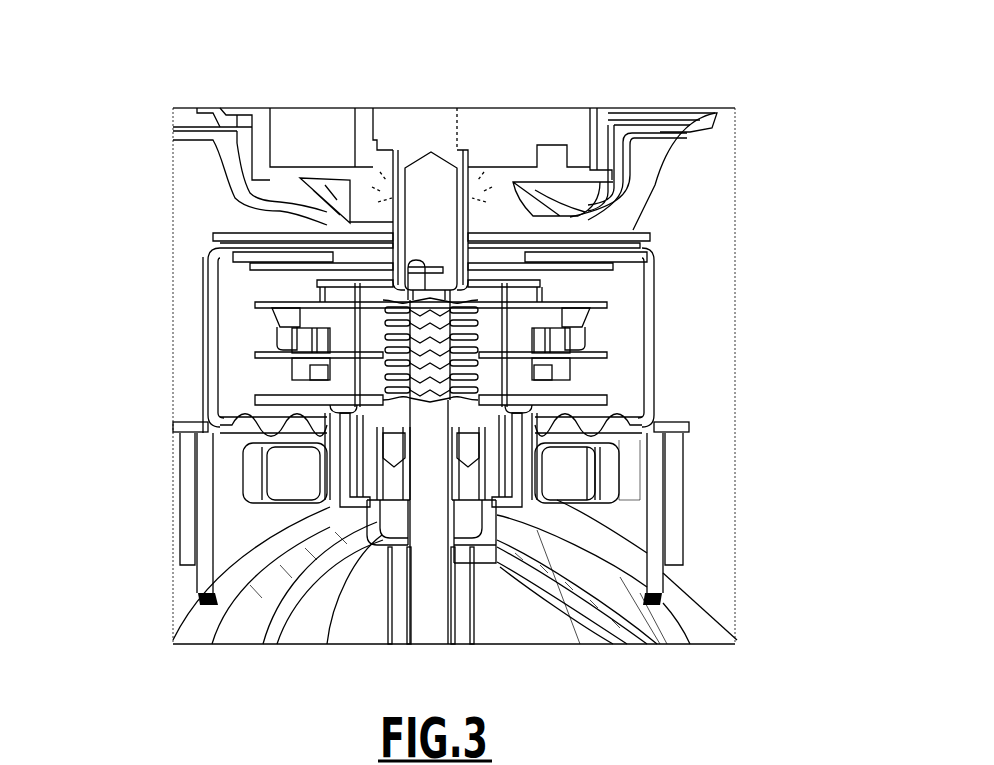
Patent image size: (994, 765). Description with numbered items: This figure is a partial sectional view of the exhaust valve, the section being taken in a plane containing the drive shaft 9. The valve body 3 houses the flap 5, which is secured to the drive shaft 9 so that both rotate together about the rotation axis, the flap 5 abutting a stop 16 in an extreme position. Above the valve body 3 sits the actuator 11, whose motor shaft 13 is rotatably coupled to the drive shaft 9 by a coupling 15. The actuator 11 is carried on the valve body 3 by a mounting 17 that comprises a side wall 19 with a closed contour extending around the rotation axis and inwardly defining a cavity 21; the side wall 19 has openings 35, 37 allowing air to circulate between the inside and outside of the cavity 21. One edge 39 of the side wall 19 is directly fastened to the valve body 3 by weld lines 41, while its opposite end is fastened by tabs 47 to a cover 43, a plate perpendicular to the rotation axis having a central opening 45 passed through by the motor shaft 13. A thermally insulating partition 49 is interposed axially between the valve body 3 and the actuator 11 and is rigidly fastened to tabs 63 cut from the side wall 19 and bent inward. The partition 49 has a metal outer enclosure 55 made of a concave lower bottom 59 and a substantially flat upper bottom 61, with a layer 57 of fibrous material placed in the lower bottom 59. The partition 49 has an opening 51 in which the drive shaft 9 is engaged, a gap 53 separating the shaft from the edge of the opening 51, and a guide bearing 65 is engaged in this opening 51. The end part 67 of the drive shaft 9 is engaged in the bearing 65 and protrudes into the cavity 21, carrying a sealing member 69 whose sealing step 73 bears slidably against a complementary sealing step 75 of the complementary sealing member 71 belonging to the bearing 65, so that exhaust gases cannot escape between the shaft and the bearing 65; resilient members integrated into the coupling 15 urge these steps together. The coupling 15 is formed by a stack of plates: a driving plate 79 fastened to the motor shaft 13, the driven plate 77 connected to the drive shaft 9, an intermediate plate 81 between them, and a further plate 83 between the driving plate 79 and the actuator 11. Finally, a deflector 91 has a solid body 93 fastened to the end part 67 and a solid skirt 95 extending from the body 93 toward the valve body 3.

The valve body 3 is at (667, 633).
The flap 5 is at (360, 618).
The drive shaft 9 is at (423, 570).
The actuator 11 is at (395, 80).
The motor shaft 13 is at (427, 215).
The coupling 15 is at (225, 312).
The stop 16 is at (603, 607).
The mounting 17 is at (168, 478).
The side wall 19 is at (177, 428).
The cavity 21 is at (650, 315).
The opening 35 is at (375, 405).
The opening 37 is at (655, 370).
The edge 39 is at (663, 600).
The weld lines 41 is at (737, 640).
The cover 43 is at (717, 113).
The central opening 45 is at (493, 167).
The tabs 47 is at (655, 308).
The thermally insulating partition 49 is at (672, 465).
The opening 51 is at (657, 563).
The gap 53 is at (340, 527).
The metal outer enclosure 55 is at (617, 483).
The layer of fibrous material 57 is at (185, 605).
The concave lower bottom 59 is at (325, 480).
The upper bottom 61 is at (253, 447).
The tabs 63 is at (292, 480).
The guide bearing 65 is at (388, 527).
The end part 67 is at (288, 321).
The sealing member 69 is at (650, 427).
The complementary sealing member 71 is at (580, 588).
The sealing step 73 is at (655, 460).
The complementary sealing step 75 is at (470, 540).
The plate 77 is at (640, 397).
The driving plate 79 is at (640, 282).
The intermediate plate 81 is at (628, 327).
The plate 83 is at (550, 282).
The deflector 91 is at (607, 355).
The body 93 is at (383, 387).
The skirt 95 is at (212, 644).